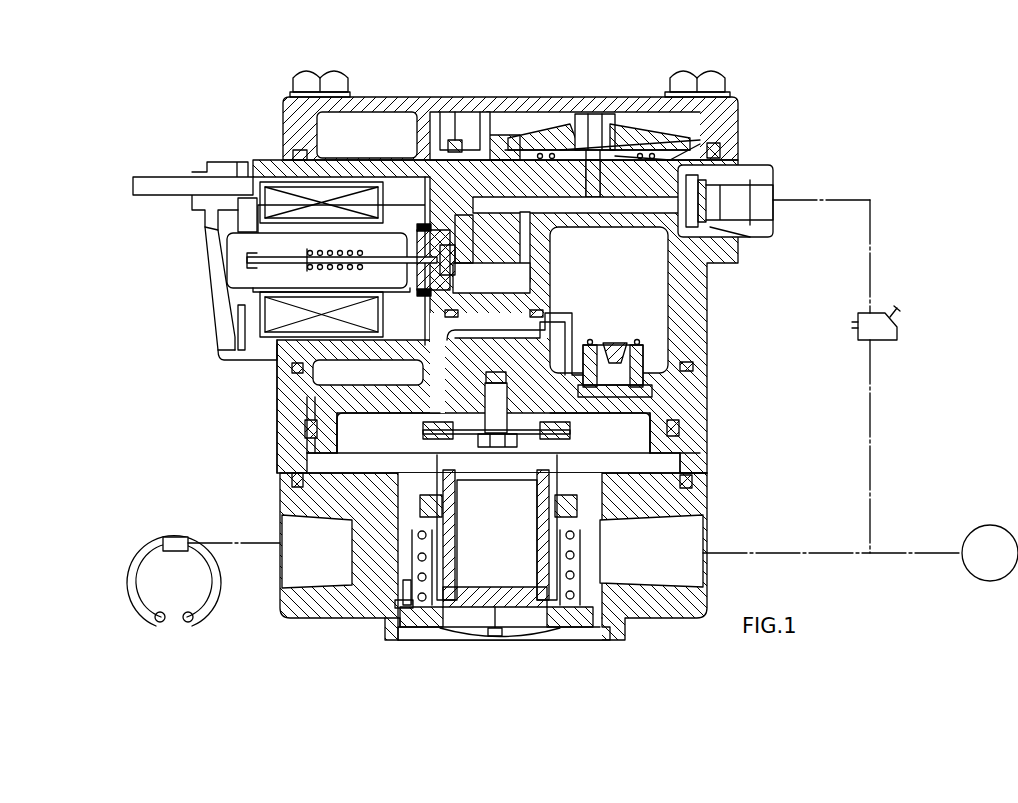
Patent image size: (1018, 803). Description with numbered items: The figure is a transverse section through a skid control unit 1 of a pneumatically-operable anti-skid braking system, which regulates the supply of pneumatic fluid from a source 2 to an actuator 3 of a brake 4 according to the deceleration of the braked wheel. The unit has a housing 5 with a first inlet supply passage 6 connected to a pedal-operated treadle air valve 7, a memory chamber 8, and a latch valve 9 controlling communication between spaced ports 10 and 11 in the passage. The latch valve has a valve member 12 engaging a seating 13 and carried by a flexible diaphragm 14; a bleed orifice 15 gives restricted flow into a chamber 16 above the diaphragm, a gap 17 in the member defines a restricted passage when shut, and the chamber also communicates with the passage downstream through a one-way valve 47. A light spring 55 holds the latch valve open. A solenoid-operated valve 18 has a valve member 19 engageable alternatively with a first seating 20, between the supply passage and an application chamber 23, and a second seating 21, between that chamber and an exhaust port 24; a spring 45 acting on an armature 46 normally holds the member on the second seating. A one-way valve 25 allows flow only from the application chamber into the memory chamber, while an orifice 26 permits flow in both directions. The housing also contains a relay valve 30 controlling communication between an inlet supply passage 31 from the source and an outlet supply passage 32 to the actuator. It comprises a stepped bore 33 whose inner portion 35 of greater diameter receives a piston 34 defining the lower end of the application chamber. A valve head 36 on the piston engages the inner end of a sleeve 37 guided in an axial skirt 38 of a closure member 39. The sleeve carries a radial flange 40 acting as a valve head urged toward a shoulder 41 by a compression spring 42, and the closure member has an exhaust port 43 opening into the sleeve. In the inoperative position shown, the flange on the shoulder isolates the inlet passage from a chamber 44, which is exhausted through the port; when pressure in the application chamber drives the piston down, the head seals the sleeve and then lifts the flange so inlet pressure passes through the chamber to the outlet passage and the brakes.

The skid control unit 1 is at (421, 96).
The source 2 is at (968, 570).
The actuator 3 is at (169, 539).
The brake 4 is at (213, 607).
The housing 5 is at (695, 328).
The first inlet supply passage 6 is at (740, 232).
The pedal-operated treadle air valve 7 is at (885, 335).
The memory chamber 8 is at (655, 283).
The latch valve 9 is at (614, 112).
The port 10 is at (598, 175).
The port 11 is at (524, 165).
The valve member 12 is at (572, 130).
The seating 13 is at (672, 158).
The flexible diaphragm 14 is at (680, 92).
The bleed orifice 15 is at (589, 148).
The chamber 16 is at (520, 117).
The gap 17 is at (637, 132).
The solenoid-operated valve 18 is at (305, 215).
The valve member 19 is at (410, 252).
The first seating 20 is at (455, 246).
The second seating 21 is at (430, 240).
The application chamber 23 is at (560, 340).
The exhaust port 24 is at (425, 262).
The one-way valve 25 is at (614, 342).
The orifice 26 is at (640, 358).
The relay valve 30 is at (468, 598).
The inlet supply passage 31 is at (680, 548).
The outlet supply passage 32 is at (335, 548).
The bore 33 is at (700, 455).
The piston 34 is at (676, 405).
The inner portion 35 is at (283, 462).
The valve head 36 is at (570, 433).
The sleeve 37 is at (422, 580).
The axial skirt 38 is at (632, 625).
The closure member 39 is at (548, 610).
The radial flange 40 is at (368, 590).
The shoulder 41 is at (420, 500).
The compression spring 42 is at (410, 585).
The exhaust port 43 is at (480, 615).
The chamber 44 is at (668, 460).
The spring 45 is at (288, 268).
The armature 46 is at (247, 277).
The one-way valve 47 is at (452, 142).
The light spring 55 is at (717, 146).